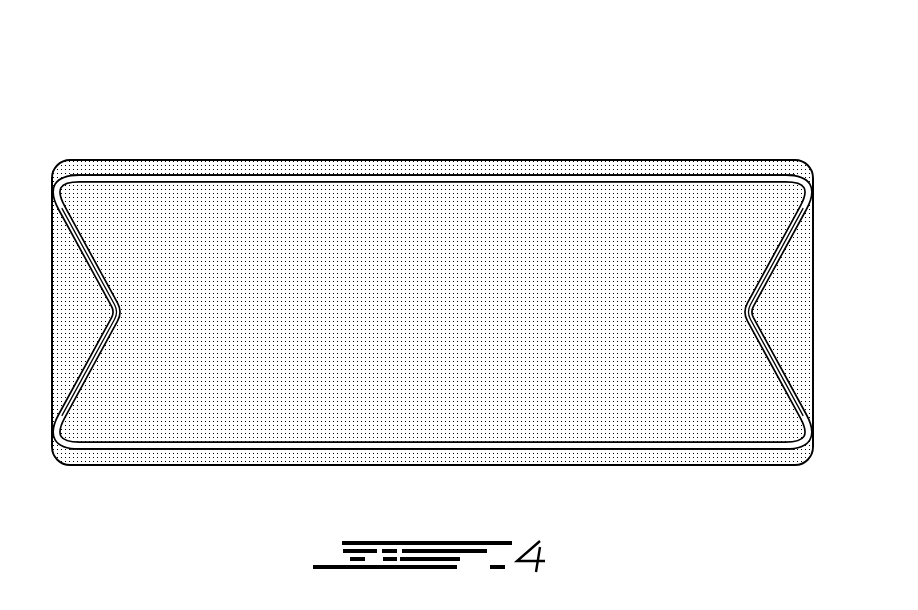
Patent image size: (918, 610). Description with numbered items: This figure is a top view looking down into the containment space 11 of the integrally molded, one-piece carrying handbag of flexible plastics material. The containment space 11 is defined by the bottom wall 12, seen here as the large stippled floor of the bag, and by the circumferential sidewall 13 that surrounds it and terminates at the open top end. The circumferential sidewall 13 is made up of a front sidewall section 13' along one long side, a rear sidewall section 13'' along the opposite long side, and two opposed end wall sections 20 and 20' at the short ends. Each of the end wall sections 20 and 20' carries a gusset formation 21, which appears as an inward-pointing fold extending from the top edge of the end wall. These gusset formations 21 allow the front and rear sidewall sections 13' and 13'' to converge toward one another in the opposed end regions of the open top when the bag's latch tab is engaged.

The containment space 11 is at (448, 320).
The bottom wall 12 is at (296, 288).
The circumferential sidewall 13 is at (432, 247).
The front sidewall section 13' is at (432, 480).
The rear sidewall section 13'' is at (432, 125).
The end wall section 20 is at (815, 359).
The end wall section 20' is at (48, 358).
The gusset formation 21 is at (82, 258).